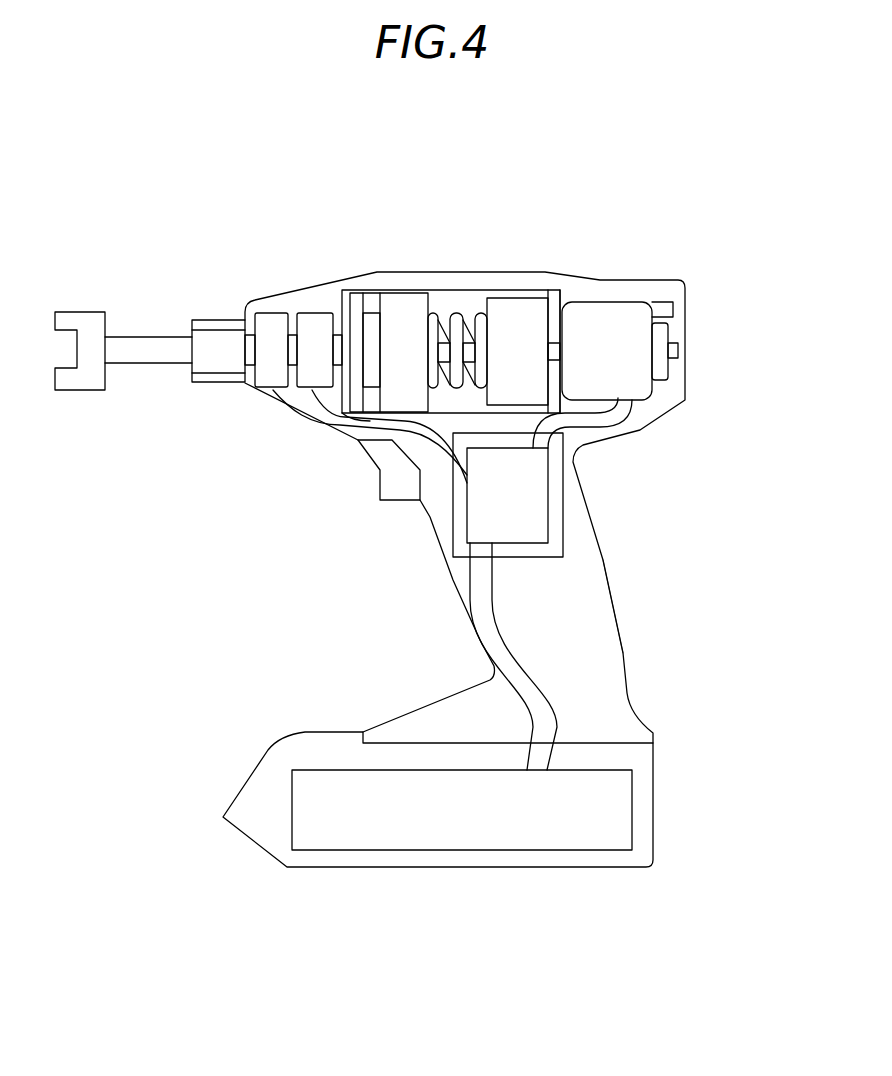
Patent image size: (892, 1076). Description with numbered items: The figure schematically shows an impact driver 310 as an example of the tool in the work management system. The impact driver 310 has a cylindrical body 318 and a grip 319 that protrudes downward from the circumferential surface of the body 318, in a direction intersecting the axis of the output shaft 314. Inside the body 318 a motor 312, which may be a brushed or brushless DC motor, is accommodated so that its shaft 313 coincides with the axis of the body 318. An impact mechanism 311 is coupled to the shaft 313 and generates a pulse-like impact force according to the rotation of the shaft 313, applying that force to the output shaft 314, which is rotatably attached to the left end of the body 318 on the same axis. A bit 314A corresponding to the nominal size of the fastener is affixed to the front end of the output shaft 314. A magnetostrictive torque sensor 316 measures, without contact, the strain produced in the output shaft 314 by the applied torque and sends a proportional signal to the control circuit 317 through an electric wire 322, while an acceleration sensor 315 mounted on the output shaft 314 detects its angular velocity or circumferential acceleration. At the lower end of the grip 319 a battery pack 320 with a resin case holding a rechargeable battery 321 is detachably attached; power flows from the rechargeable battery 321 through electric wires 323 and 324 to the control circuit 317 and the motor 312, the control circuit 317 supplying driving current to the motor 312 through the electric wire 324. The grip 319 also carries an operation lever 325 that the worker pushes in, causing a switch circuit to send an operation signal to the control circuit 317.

The impact driver 310 is at (727, 658).
The impact mechanism 311 is at (447, 290).
The motor 312 is at (622, 330).
The shaft 313 is at (553, 320).
The output shaft 314 is at (213, 340).
The bit 314A is at (127, 347).
The acceleration sensor 315 is at (318, 325).
The magnetostrictive torque sensor 316 is at (262, 325).
The control circuit 317 is at (540, 495).
The body 318 is at (670, 395).
The grip 319 is at (603, 602).
The battery pack 320 is at (650, 795).
The rechargeable battery 321 is at (550, 830).
The electric wire 322 is at (300, 408).
The electric wire 323 is at (495, 620).
The electric wire 324 is at (637, 413).
The operation lever 325 is at (390, 483).